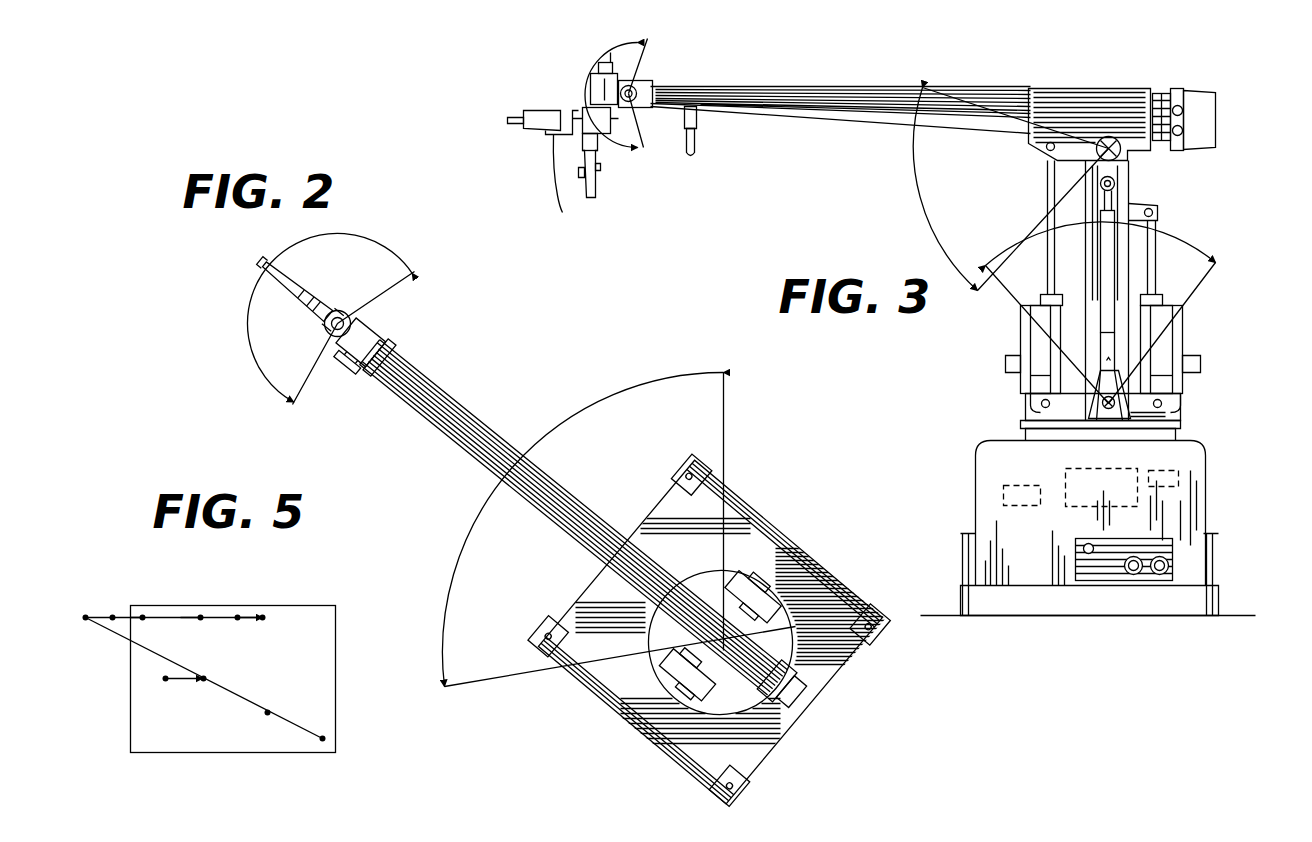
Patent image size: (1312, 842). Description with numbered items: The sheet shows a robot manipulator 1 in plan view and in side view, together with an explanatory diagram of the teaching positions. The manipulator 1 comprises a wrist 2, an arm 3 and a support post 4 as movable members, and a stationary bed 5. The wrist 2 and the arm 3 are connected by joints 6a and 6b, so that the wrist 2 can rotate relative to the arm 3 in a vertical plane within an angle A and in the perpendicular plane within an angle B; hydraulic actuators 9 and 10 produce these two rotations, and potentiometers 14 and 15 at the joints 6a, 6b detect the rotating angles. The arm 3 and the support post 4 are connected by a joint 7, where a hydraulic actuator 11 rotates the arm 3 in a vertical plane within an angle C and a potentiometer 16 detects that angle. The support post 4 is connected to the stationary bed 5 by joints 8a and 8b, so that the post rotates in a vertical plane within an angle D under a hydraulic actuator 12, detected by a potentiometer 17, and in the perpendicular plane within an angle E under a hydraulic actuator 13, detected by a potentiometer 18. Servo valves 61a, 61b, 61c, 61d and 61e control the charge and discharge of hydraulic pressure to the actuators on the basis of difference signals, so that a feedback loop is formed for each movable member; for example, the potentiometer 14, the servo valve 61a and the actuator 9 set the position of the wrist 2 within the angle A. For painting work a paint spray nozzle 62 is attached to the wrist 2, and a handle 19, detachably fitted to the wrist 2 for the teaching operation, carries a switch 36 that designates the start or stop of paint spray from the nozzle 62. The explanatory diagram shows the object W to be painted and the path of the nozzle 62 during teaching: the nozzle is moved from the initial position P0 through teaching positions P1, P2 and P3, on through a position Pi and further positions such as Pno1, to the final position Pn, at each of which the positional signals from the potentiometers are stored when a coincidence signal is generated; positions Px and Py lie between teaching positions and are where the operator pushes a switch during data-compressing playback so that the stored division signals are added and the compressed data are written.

In FIG. 3, the robot manipulator 1 is at (862, 158).
In FIG. 2, the robot manipulator 1 is at (518, 396).
In FIG. 3, the wrist 2 is at (590, 118).
In FIG. 2, the wrist 2 is at (332, 315).
In FIG. 3, the arm 3 is at (840, 96).
In FIG. 2, the arm 3 is at (580, 514).
In FIG. 3, the support post 4 is at (1092, 263).
In FIG. 2, the support post 4 is at (762, 644).
In FIG. 3, the stationary bed 5 is at (1000, 468).
In FIG. 2, the stationary bed 5 is at (790, 590).
In FIG. 3, the joint 6a is at (636, 90).
In FIG. 3, the joint 6b is at (600, 82).
In FIG. 3, the joint 7 is at (1098, 140).
In FIG. 3, the joint 8a is at (1130, 405).
In FIG. 3, the joint 8b is at (1160, 424).
In FIG. 2, the joint 8b is at (724, 716).
In FIG. 3, the hydraulic actuator 9 is at (648, 125).
In FIG. 3, the hydraulic actuator 10 is at (612, 76).
In FIG. 3, the hydraulic actuator 11 is at (1040, 350).
In FIG. 3, the hydraulic actuator 12 is at (1160, 346).
In FIG. 3, the hydraulic actuator 13 is at (1080, 506).
In FIG. 3, the potentiometer 14 is at (632, 102).
In FIG. 3, the potentiometer 15 is at (610, 58).
In FIG. 2, the potentiometer 15 is at (328, 324).
In FIG. 3, the potentiometer 16 is at (1108, 137).
In FIG. 3, the potentiometer 17 is at (1055, 400).
In FIG. 2, the potentiometer 17 is at (738, 600).
In FIG. 3, the potentiometer 18 is at (1178, 475).
In FIG. 3, the handle 19 is at (595, 200).
In FIG. 3, the switch 36 is at (600, 172).
In FIG. 3, the servo valve 61a is at (1200, 108).
In FIG. 3, the servo valve 61b is at (1200, 126).
In FIG. 3, the servo valve 61c is at (1010, 362).
In FIG. 3, the servo valve 61d is at (1200, 364).
In FIG. 3, the servo valve 61e is at (1003, 494).
In FIG. 3, the paint spray nozzle 62 is at (506, 112).
In FIG. 3, the angle A is at (630, 147).
In FIG. 2, the angle B is at (342, 233).
In FIG. 3, the angle C is at (925, 210).
In FIG. 3, the angle D is at (1172, 240).
In FIG. 2, the angle E is at (582, 416).
In FIG. 5, the object W is at (310, 606).
In FIG. 5, the initial position P0 is at (85, 614).
In FIG. 5, the position Px is at (112, 614).
In FIG. 5, the teaching position P1 is at (142, 614).
In FIG. 5, the teaching position P2 is at (200, 614).
In FIG. 5, the position Py is at (237, 614).
In FIG. 5, the teaching position P3 is at (262, 614).
In FIG. 5, the teaching position Pi is at (160, 678).
In FIG. 5, the point Pno1 is at (270, 712).
In FIG. 5, the final teaching position Pn is at (322, 742).